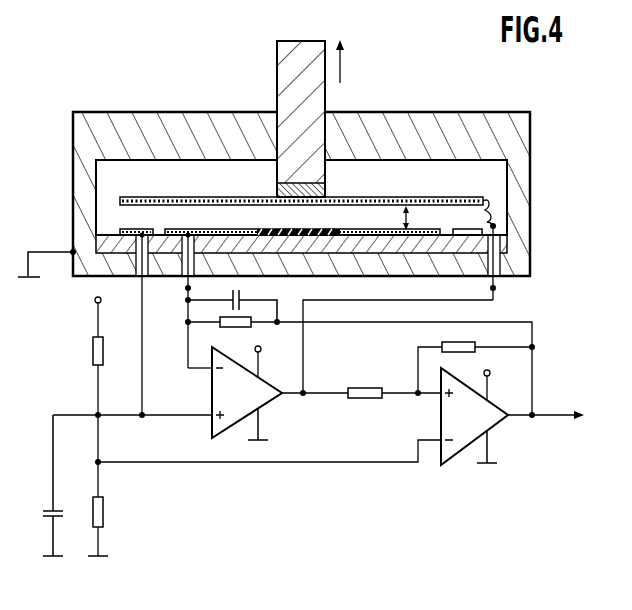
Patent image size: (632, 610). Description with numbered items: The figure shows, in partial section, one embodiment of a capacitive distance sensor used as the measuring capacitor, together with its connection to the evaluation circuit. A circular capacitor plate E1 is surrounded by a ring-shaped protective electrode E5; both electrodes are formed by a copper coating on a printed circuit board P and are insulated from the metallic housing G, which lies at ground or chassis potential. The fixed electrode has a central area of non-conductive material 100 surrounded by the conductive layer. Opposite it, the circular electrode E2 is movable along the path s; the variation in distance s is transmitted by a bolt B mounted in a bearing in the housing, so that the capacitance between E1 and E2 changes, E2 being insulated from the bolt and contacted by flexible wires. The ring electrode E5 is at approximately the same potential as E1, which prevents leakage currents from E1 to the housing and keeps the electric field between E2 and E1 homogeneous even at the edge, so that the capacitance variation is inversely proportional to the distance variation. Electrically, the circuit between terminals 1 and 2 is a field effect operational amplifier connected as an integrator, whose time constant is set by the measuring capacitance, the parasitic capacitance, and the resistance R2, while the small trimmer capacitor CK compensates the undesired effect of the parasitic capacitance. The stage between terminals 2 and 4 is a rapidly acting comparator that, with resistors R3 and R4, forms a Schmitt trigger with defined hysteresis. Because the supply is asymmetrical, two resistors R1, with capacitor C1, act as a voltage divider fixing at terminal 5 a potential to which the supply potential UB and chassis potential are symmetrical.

The bolt B is at (293, 77).
The path s is at (378, 135).
The metallic housing G is at (519, 142).
The printed circuit board P is at (509, 246).
The circular electrode E2 is at (204, 196).
The ring-shaped protective electrode E5 is at (150, 233).
The capacitor plate E1 is at (224, 224).
The non-conductive material 100 is at (323, 223).
The terminal 1 is at (184, 326).
The trimmer capacitor CK is at (245, 293).
The resistance R2 is at (215, 315).
The terminal 2 is at (387, 348).
The resistor R3 is at (394, 408).
The resistor R4 is at (440, 341).
The terminal 4 is at (546, 428).
The terminal 5 is at (132, 428).
The resistor R1 is at (98, 429).
The capacitor C1 is at (41, 485).
The supply potential UB is at (293, 338).